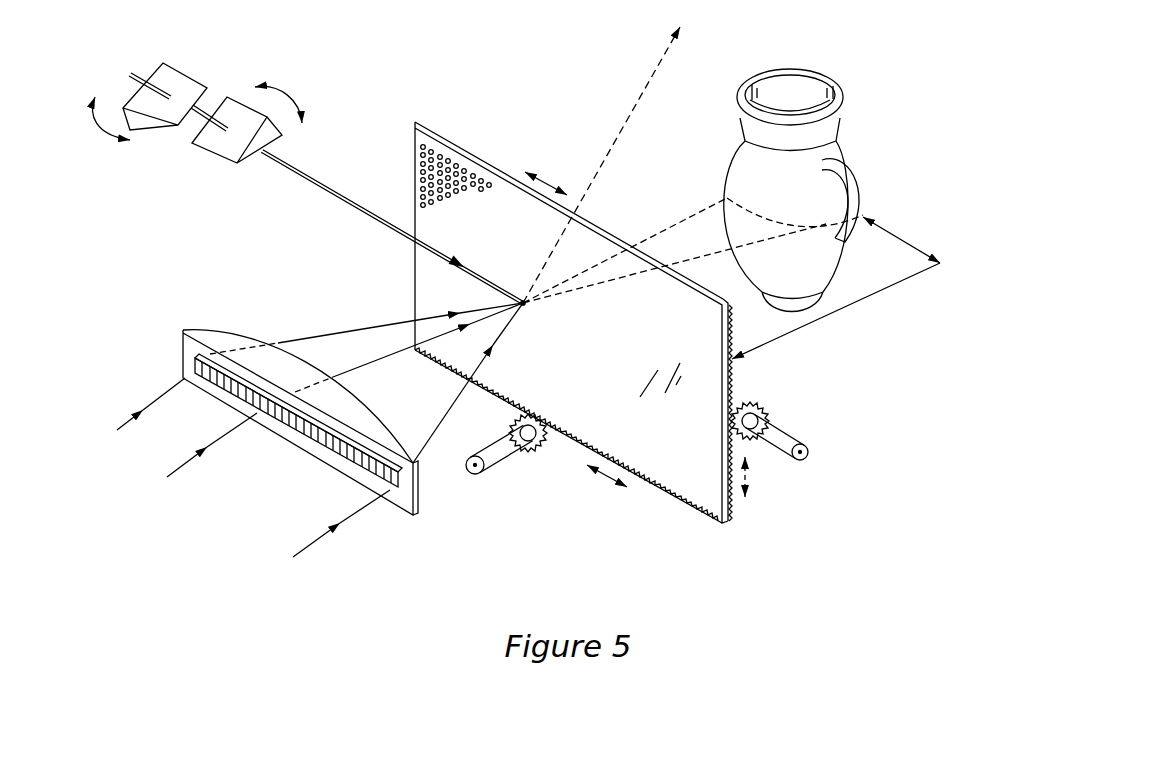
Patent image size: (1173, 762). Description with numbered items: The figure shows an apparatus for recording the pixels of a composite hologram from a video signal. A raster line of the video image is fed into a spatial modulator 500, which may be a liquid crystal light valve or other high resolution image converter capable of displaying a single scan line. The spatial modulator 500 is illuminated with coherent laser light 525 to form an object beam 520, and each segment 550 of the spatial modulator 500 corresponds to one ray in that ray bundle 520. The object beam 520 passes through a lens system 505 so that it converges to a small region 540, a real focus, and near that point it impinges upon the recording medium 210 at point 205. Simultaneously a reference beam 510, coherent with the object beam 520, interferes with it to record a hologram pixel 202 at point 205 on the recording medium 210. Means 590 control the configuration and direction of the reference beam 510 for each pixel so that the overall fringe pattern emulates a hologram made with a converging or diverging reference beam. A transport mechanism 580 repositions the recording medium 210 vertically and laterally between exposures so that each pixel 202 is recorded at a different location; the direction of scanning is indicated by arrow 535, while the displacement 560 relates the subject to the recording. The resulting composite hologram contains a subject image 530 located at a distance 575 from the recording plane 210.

The means for controlling the configuration and direction of the reference beam 590 is at (260, 110).
The reference beam 510 is at (310, 170).
The hologram pixel 202 is at (440, 153).
The point of the object beam on the recording medium 205 is at (492, 298).
The recording medium 210 is at (693, 503).
The real focus 540 is at (523, 303).
The scanning direction arrow 535 is at (633, 108).
The object beam 520 is at (415, 320).
The spatial modulator 500 is at (390, 497).
The lens system 505 is at (422, 498).
The segment 550 is at (288, 424).
The coherent laser light 525 is at (310, 546).
The subject image 530 is at (843, 97).
The object scan displacement vector 560 is at (882, 225).
The distance 575 is at (857, 305).
The transport mechanism 580 is at (497, 472).